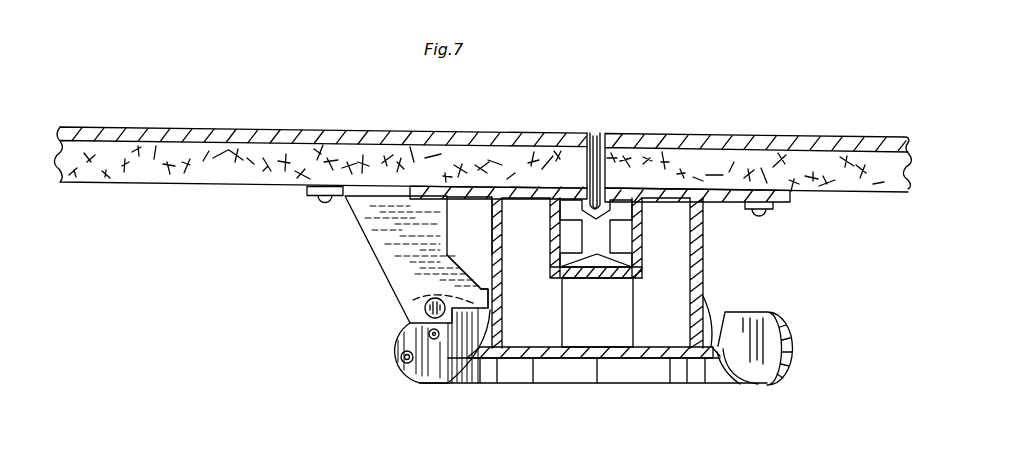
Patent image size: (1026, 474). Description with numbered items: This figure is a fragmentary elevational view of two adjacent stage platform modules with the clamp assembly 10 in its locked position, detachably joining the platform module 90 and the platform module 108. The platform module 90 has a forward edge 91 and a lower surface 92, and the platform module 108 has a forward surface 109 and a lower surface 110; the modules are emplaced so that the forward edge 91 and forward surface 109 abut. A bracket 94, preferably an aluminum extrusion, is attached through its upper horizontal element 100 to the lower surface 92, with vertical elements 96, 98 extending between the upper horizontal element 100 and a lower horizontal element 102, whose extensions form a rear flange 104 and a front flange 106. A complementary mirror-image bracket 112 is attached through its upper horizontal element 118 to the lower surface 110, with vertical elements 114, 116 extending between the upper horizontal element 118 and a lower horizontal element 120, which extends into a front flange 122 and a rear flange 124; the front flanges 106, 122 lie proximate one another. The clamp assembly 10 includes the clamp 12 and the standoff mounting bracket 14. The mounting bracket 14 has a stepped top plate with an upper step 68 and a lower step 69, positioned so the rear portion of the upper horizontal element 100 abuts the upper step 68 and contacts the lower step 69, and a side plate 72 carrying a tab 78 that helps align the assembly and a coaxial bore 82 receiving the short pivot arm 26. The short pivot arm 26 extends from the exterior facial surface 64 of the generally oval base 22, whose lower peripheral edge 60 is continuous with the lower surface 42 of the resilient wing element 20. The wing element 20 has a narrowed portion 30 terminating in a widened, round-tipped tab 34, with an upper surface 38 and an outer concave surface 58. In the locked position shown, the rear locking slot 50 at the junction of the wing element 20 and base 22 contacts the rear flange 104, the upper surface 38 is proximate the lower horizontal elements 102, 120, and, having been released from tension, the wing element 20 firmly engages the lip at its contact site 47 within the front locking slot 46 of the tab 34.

The clamp assembly 10 is at (395, 358).
The clamp 12 is at (593, 407).
The standoff mounting bracket 14 is at (396, 259).
The wing element 20 is at (670, 386).
The base 22 is at (408, 353).
The short pivot arm 26 is at (424, 308).
The narrowed portion 30 is at (656, 383).
The tab 34 is at (771, 364).
The upper surface 38 is at (571, 362).
The lower surface 42 is at (529, 385).
The front locking slot 46 is at (733, 353).
The contact site 47 is at (757, 373).
The rear locking slot 50 is at (449, 384).
The outer concave surface 58 is at (629, 379).
The lower peripheral edge 60 is at (407, 377).
The exterior facial surface 64 is at (393, 345).
The upper step 68 is at (382, 184).
The lower step 69 is at (439, 196).
The side plate 72 is at (360, 236).
The tab 78 is at (489, 296).
The coaxial bore 82 is at (428, 297).
The platform module 90 is at (222, 127).
The forward edge 91 is at (593, 131).
The lower surface 92 is at (230, 186).
The bracket 94 is at (492, 243).
The vertical element 96 is at (502, 264).
The vertical element 98 is at (551, 287).
The upper horizontal element 100 is at (517, 199).
The lower horizontal element 102 is at (511, 349).
The rear flange 104 is at (501, 329).
The front flange 106 is at (579, 345).
The platform module 108 is at (681, 128).
The forward surface 109 is at (599, 140).
The lower surface 110 is at (826, 190).
The bracket 112 is at (705, 245).
The vertical element 114 is at (644, 301).
The vertical element 116 is at (690, 273).
The upper horizontal element 118 is at (645, 205).
The lower horizontal element 120 is at (655, 347).
The front flange 122 is at (599, 345).
The rear flange 124 is at (712, 317).